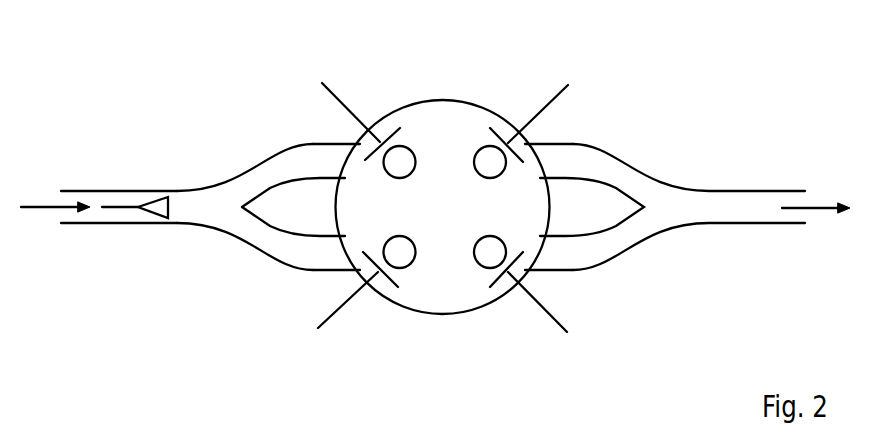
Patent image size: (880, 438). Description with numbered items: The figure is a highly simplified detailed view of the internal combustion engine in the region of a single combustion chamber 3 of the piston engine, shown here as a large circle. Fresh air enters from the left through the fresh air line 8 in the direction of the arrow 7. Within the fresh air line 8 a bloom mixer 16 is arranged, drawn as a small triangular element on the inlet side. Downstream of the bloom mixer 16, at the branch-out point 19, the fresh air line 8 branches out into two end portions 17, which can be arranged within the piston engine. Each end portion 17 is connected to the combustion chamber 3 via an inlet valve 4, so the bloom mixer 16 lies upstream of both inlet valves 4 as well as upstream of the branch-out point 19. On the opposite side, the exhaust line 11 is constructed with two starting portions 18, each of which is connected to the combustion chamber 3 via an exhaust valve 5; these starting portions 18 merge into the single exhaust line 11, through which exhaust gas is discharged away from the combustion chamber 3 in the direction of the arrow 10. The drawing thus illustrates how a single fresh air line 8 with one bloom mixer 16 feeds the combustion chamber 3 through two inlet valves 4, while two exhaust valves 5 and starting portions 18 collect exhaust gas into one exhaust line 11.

The combustion chamber 3 is at (434, 222).
The inlet valve 4 is at (357, 137).
The exhaust valve 5 is at (533, 113).
The arrow 7 is at (47, 207).
The fresh air line 8 is at (110, 190).
The arrow 10 is at (820, 208).
The exhaust line 11 is at (745, 190).
The bloom mixer 16 is at (145, 205).
The end portion 17 is at (305, 143).
The starting portion 18 is at (585, 143).
The branch-out point 19 is at (230, 203).